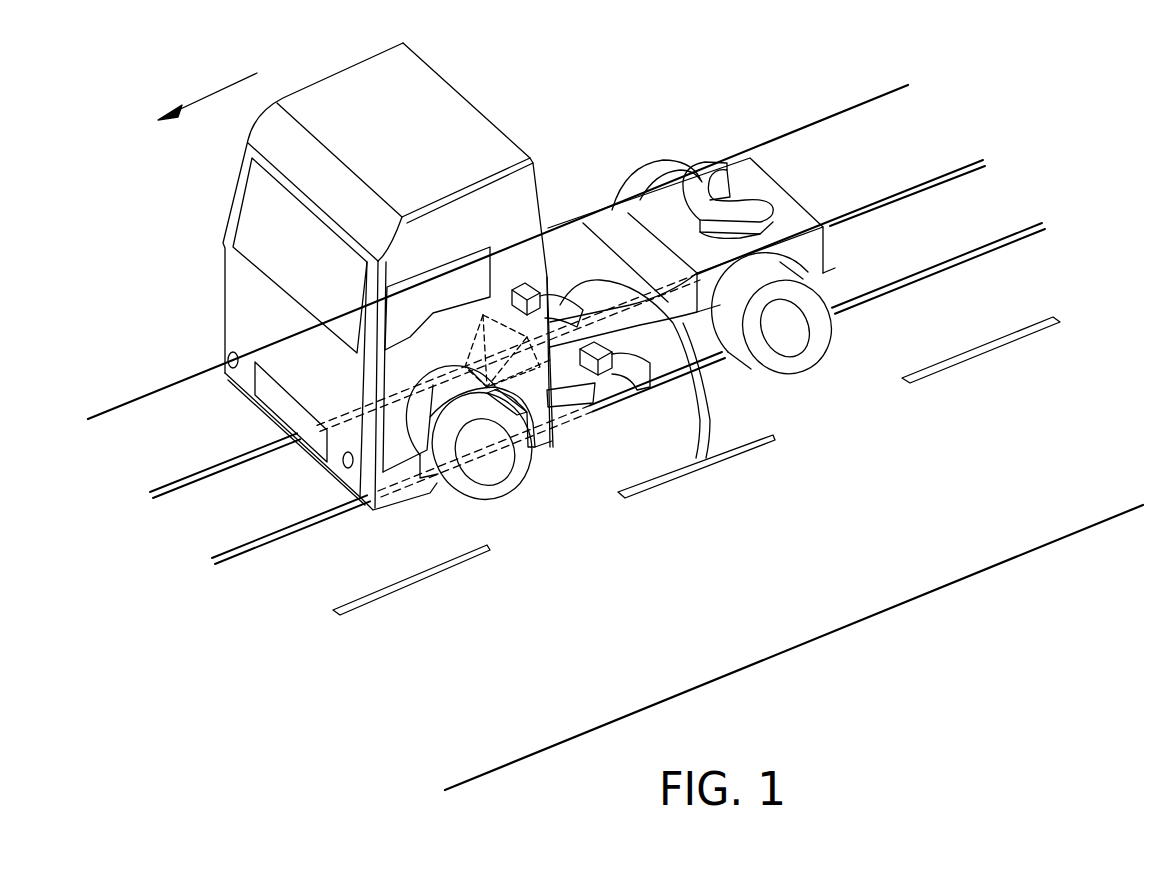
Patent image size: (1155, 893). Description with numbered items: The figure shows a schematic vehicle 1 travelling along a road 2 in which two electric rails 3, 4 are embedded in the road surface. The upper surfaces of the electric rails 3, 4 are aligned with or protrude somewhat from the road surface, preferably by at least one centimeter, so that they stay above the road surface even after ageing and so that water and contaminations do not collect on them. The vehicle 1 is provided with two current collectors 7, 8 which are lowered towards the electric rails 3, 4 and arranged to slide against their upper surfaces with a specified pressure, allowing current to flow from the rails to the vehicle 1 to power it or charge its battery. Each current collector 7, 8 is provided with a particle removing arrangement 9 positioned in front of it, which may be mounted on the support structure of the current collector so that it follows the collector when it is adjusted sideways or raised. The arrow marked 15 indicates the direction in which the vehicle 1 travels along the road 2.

The vehicle 1 is at (608, 78).
The road 2 is at (715, 602).
The electric rail 3 is at (955, 166).
The electric rail 4 is at (1032, 223).
The current collector 7 is at (660, 362).
The current collector 8 is at (672, 347).
The particle removing arrangement 9 is at (565, 415).
The direction of travel 15 is at (217, 87).